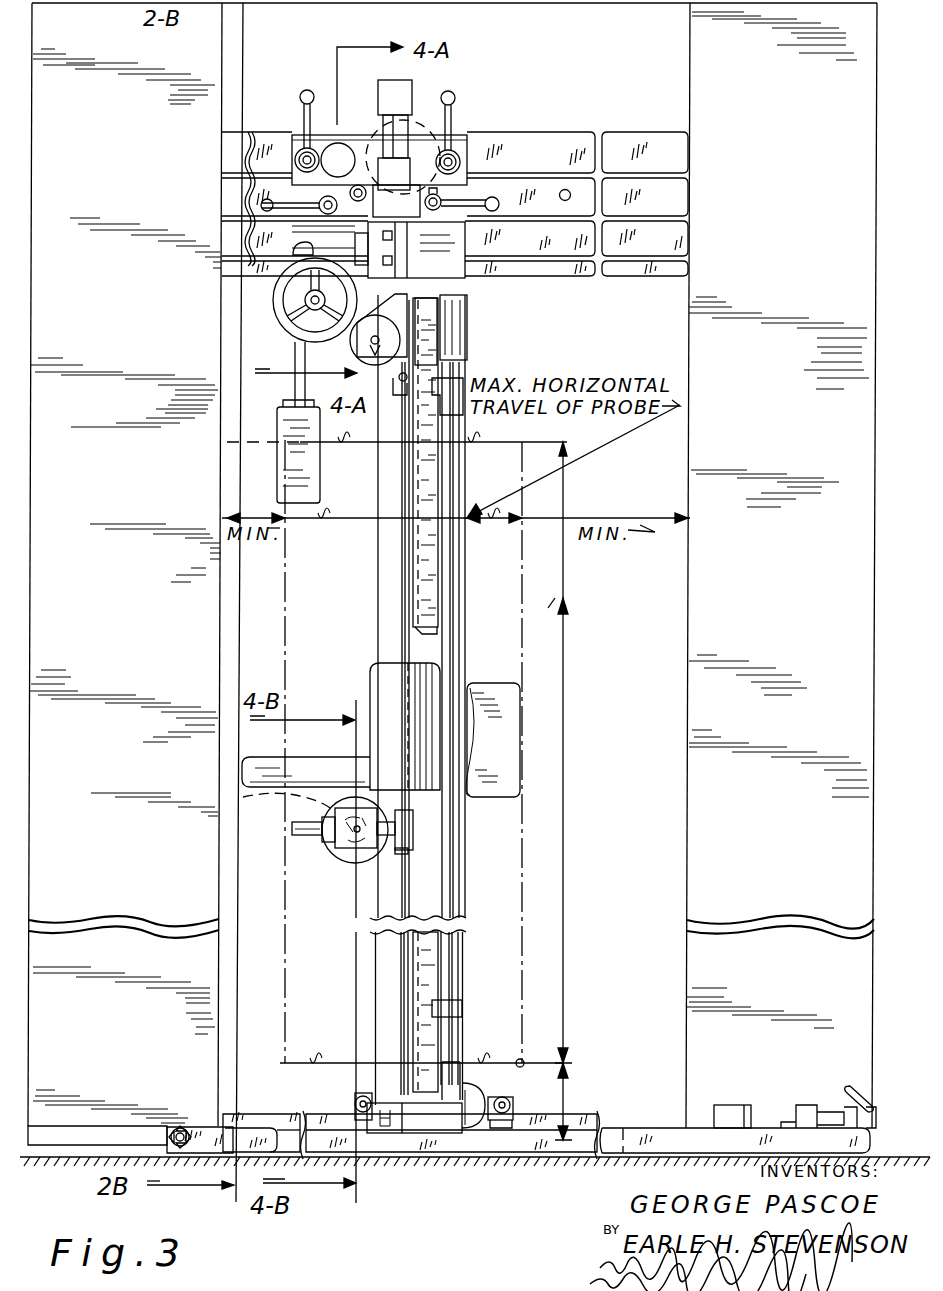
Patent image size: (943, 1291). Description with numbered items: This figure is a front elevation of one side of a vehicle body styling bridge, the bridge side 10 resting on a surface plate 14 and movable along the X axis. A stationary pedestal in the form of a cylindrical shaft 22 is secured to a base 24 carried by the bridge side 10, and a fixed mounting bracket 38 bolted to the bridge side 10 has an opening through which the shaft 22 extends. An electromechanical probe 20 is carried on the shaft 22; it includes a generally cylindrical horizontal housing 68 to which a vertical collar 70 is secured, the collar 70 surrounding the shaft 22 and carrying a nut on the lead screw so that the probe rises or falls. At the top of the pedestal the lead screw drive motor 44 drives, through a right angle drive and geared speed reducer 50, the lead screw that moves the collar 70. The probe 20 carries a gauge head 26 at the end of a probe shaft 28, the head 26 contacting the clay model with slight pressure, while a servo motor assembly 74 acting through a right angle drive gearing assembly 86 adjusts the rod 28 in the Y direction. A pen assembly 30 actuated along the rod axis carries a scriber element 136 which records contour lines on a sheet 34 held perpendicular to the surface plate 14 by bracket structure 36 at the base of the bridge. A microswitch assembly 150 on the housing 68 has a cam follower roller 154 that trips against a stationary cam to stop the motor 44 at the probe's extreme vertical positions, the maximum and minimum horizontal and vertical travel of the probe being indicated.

The bridge side 10 is at (277, 195).
The surface plate 14 is at (610, 1137).
The electromechanical probe 20 is at (312, 850).
The cylindrical shaft 22 is at (385, 547).
The base 24 is at (395, 1133).
The gauge head 26 is at (522, 442).
The probe shaft 28 is at (288, 800).
The pen assembly 30 is at (345, 862).
The sheet 34 is at (407, 587).
The bracket structure 36 is at (478, 1128).
The fixed mounting bracket 38 is at (432, 262).
The lead screw drive motor 44 is at (440, 117).
The right angle drive and geared speed reducer 50 is at (412, 82).
The cylindrical housing 68 is at (340, 857).
The collar 70 is at (377, 668).
The servo motor assembly 74 is at (303, 757).
The right angle drive gearing assembly 86 is at (425, 752).
The scriber element 136 is at (405, 850).
The microswitch assembly 150 is at (395, 828).
The cam follower roller 154 is at (413, 812).